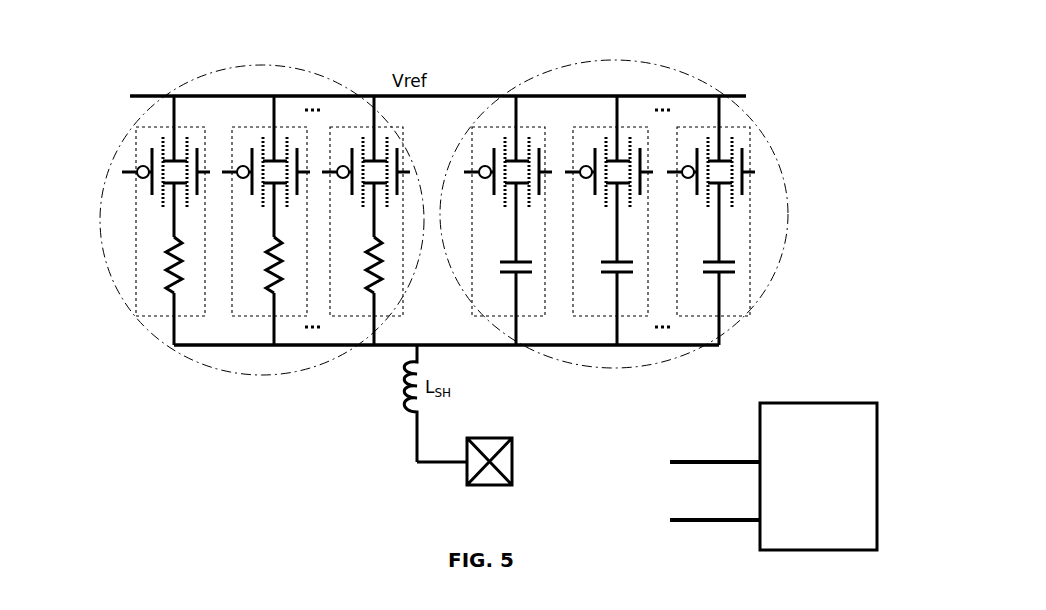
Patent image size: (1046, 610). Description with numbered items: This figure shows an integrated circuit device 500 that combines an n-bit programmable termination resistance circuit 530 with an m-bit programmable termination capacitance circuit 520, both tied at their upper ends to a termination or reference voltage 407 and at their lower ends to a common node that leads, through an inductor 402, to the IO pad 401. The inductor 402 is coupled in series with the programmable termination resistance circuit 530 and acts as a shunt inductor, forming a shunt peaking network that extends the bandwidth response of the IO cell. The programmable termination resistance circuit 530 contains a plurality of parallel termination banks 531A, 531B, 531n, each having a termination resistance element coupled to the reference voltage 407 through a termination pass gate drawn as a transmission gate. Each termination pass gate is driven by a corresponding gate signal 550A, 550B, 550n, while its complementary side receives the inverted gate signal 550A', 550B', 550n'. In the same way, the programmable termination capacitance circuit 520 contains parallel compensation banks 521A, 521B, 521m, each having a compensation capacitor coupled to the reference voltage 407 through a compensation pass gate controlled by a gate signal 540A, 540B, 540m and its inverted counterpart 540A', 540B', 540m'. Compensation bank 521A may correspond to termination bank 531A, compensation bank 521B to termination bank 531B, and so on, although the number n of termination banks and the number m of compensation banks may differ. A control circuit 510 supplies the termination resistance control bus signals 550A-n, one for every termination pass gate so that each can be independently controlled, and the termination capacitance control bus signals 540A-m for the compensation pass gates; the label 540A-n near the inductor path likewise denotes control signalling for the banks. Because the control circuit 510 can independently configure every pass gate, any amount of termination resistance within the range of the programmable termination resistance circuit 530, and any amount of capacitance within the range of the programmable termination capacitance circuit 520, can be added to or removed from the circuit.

The integrated circuit device 500 is at (784, 69).
The reference voltage 407 is at (455, 96).
The programmable termination resistance circuit 530 is at (190, 82).
The programmable termination capacitance circuit 520 is at (705, 80).
The gate signal 550A is at (201, 166).
The gate signal 550B is at (301, 166).
The gate signal 550n is at (401, 166).
The inverted gate signal 550A' is at (122, 195).
The inverted gate signal 550B' is at (224, 195).
The inverted gate signal 550n' is at (323, 195).
The gate signal 540A is at (540, 179).
The gate signal 540B is at (642, 179).
The gate signal 540m is at (756, 179).
The inverted gate signal 540A' is at (465, 195).
The inverted gate signal 540B' is at (564, 195).
The inverted gate signal 540m' is at (666, 195).
The termination bank 531A is at (160, 317).
The termination bank 531B is at (257, 317).
The termination bank 531n is at (342, 317).
The compensation bank 521A is at (472, 303).
The compensation bank 521B is at (597, 317).
The compensation bank 521m is at (693, 317).
The inductor 402 is at (397, 401).
The IO pad 401 is at (483, 487).
The control circuit 510 is at (818, 476).
The termination resistance control bus signals 550A-n is at (681, 462).
The termination capacitance control bus signals 540A-m is at (679, 521).
The switch control signal line 540A-n is at (412, 484).